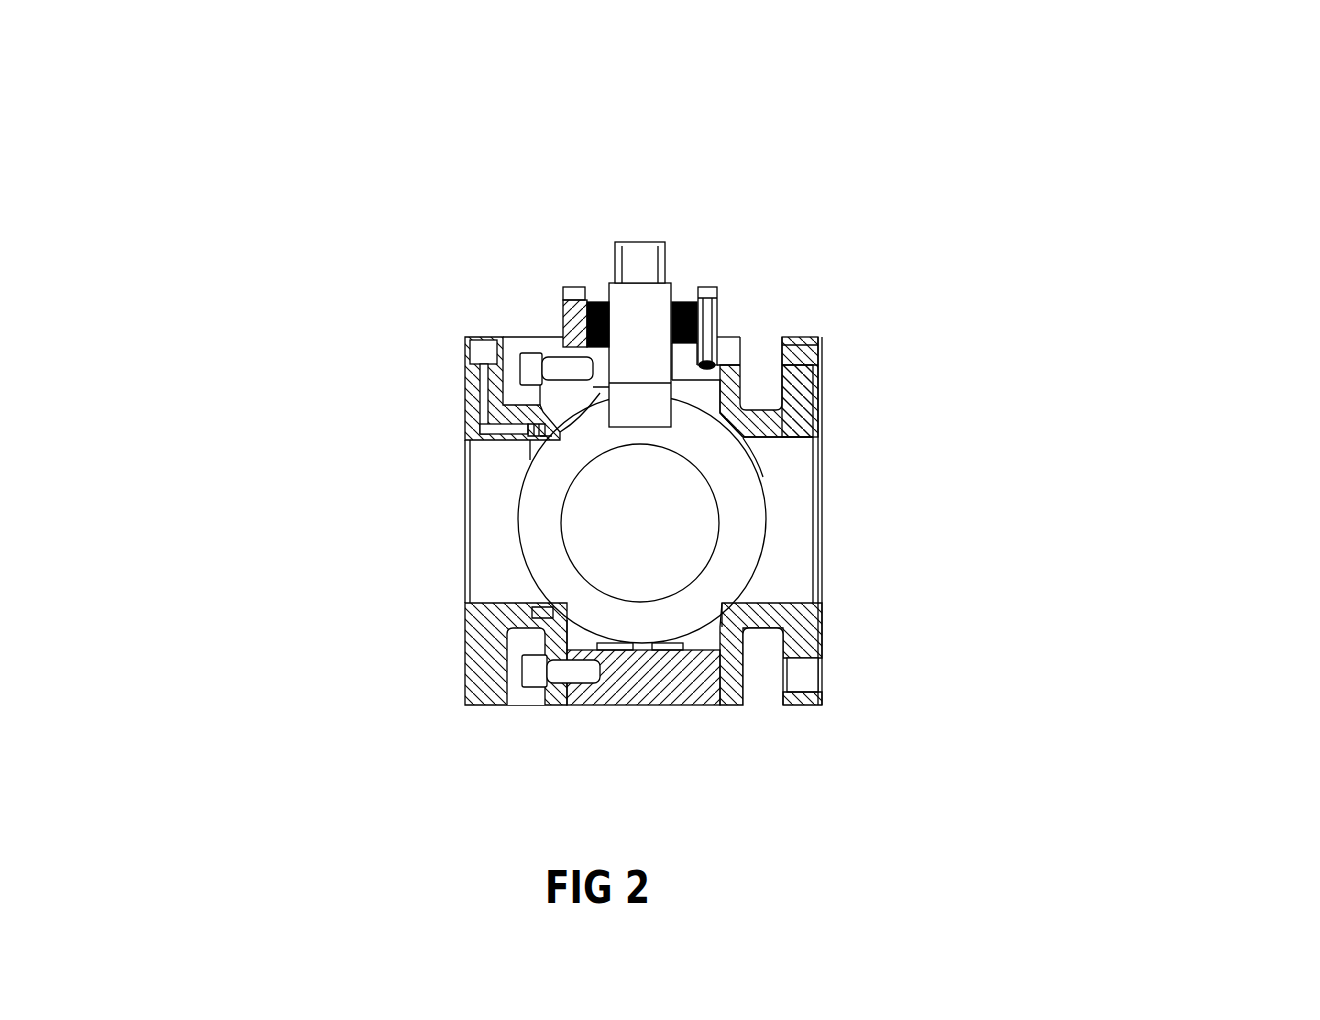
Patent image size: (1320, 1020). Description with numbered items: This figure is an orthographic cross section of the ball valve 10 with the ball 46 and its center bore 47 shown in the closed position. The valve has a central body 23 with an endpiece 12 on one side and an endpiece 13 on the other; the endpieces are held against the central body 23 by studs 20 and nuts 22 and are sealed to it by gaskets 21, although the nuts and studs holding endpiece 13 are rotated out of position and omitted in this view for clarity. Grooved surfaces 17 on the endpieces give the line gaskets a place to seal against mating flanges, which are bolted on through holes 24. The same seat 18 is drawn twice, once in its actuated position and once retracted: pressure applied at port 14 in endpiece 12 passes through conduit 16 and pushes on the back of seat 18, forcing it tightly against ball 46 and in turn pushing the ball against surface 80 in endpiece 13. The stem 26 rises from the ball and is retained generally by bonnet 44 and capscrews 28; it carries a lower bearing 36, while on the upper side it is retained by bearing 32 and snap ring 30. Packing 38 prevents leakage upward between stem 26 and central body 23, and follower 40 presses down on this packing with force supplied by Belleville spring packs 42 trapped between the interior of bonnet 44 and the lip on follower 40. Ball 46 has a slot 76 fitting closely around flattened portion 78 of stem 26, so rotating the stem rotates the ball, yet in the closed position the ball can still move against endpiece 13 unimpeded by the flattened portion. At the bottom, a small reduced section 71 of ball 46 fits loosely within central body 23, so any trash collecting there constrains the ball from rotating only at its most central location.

The valve 10 is at (619, 191).
The endpiece 12 is at (460, 338).
The endpiece 13 is at (805, 340).
The port 14 is at (500, 340).
The conduit 16 is at (467, 388).
The grooved surfaces 17 is at (468, 637).
The seat 18 is at (528, 428).
The studs 20 is at (547, 340).
The gasket 21 is at (740, 413).
The nuts 22 is at (517, 340).
The central body 23 is at (695, 705).
The holes 24 is at (822, 682).
The stem 26 is at (633, 242).
The capscrews 28 is at (674, 298).
The snap ring 30 is at (673, 298).
The bearing 32 is at (718, 287).
The lower bearing 36 is at (720, 382).
The packing 38 is at (820, 363).
The follower 40 is at (718, 318).
The Belleville spring packs 42 is at (718, 302).
The bonnet 44 is at (562, 336).
The ball 46 is at (742, 499).
The center bore 47 is at (676, 588).
The small section of ball 71 is at (659, 705).
The slot 76 is at (590, 434).
The flattened portion 78 is at (743, 440).
The surface 80 is at (822, 633).